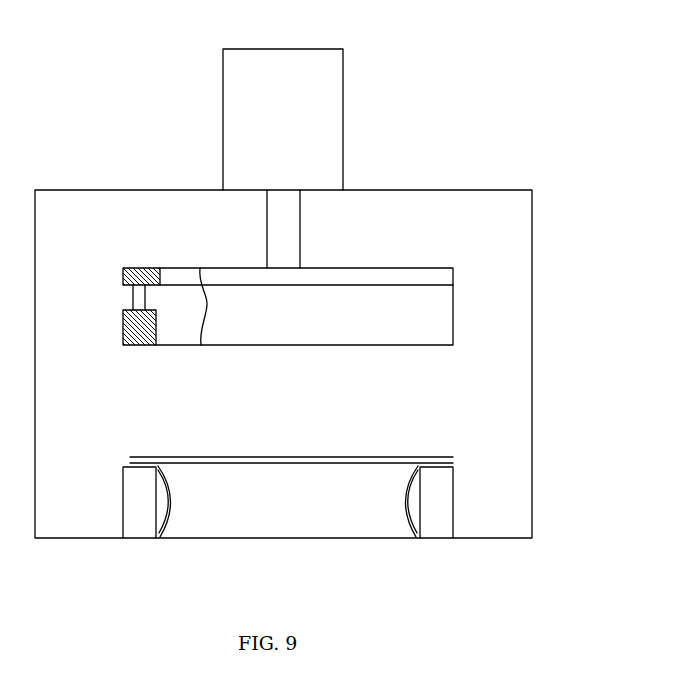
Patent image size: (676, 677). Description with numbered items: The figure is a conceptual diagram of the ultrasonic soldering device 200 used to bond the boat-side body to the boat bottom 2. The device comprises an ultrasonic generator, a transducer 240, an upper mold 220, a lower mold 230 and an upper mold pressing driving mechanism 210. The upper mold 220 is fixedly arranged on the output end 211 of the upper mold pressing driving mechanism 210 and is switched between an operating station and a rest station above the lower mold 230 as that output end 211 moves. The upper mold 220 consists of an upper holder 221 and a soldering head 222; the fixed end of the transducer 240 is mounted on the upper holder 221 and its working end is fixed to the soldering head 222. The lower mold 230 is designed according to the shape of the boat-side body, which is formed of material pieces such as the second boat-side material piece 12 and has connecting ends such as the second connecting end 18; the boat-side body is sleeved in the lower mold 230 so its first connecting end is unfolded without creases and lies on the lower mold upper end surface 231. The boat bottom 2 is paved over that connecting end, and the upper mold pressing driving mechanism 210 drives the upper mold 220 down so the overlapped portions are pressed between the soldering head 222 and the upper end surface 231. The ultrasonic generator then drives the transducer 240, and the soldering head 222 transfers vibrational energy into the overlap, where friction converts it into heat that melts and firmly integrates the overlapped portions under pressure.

The ultrasonic soldering device 200 is at (306, 294).
The upper mold pressing driving mechanism 210 is at (233, 119).
The upper mold pressing driving mechanism output end 211 is at (336, 229).
The upper mold 220 is at (258, 280).
The upper holder 221 is at (108, 217).
The transducer 240 is at (97, 279).
The soldering head 222 is at (109, 347).
The boat bottom 2 is at (291, 428).
The second boat-side material piece 12 is at (130, 467).
The second connecting end 18 is at (157, 540).
The lower mold upper end surface 231 is at (497, 511).
The lower mold 230 is at (482, 533).